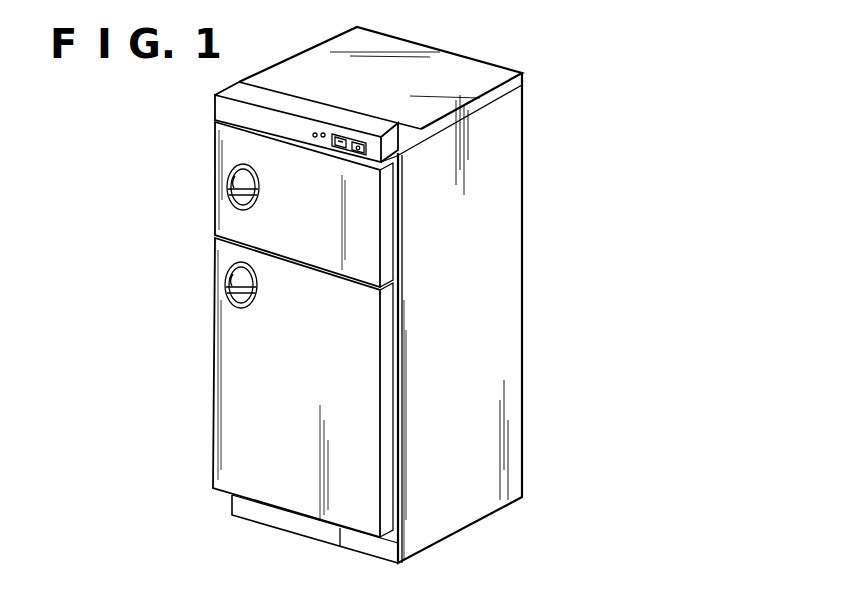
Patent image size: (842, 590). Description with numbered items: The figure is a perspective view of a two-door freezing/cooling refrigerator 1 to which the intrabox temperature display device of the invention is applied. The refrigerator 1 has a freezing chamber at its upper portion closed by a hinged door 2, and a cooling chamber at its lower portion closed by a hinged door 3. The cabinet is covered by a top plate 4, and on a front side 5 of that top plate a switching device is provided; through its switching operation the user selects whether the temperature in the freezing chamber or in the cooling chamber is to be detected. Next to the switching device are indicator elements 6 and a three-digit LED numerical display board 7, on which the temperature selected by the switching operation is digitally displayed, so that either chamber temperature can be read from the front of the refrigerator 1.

The freezing/cooling refrigerator 1 is at (513, 184).
The hinged door 2 is at (221, 215).
The hinged door 3 is at (230, 338).
The top panel 4 is at (487, 71).
The front side of top plate 5 is at (222, 107).
The indicator lights 6 is at (316, 132).
The 3-digit LED numerical display board 7 is at (356, 134).